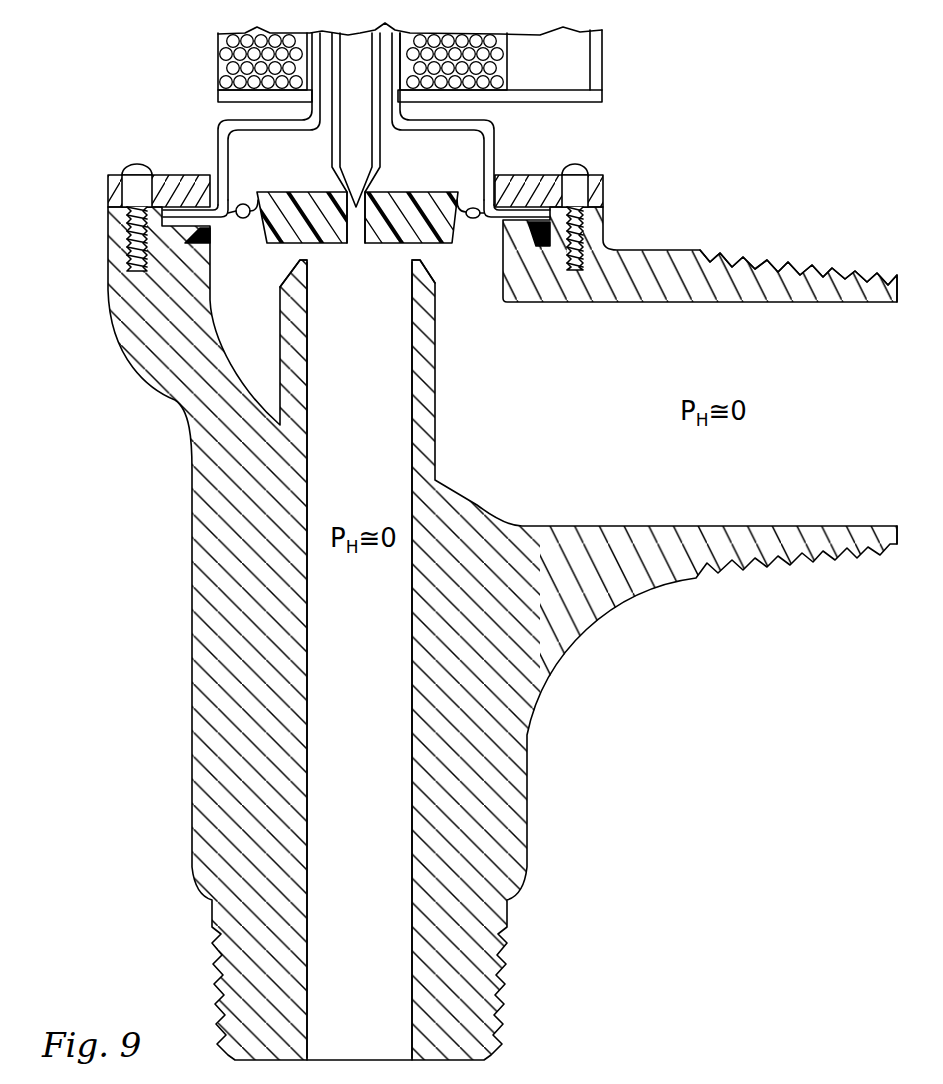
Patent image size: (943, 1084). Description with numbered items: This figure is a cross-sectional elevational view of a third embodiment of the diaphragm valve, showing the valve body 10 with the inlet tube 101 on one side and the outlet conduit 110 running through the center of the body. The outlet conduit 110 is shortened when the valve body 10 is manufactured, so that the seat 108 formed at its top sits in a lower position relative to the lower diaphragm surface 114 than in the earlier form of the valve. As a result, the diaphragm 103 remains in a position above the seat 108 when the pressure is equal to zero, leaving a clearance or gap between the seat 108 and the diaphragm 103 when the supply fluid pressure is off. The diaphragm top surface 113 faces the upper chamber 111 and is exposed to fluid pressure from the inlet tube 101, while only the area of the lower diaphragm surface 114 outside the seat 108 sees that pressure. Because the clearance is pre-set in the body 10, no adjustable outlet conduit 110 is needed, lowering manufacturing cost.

The valve body 10 is at (191, 623).
The inlet tube 101 is at (853, 333).
The diaphragm 103 is at (263, 197).
The seat 108 is at (400, 257).
The outlet conduit 110 is at (436, 397).
The upper chamber 111 is at (245, 138).
The diaphragm top surface 113 is at (400, 192).
The lower diaphragm surface 114 is at (253, 200).